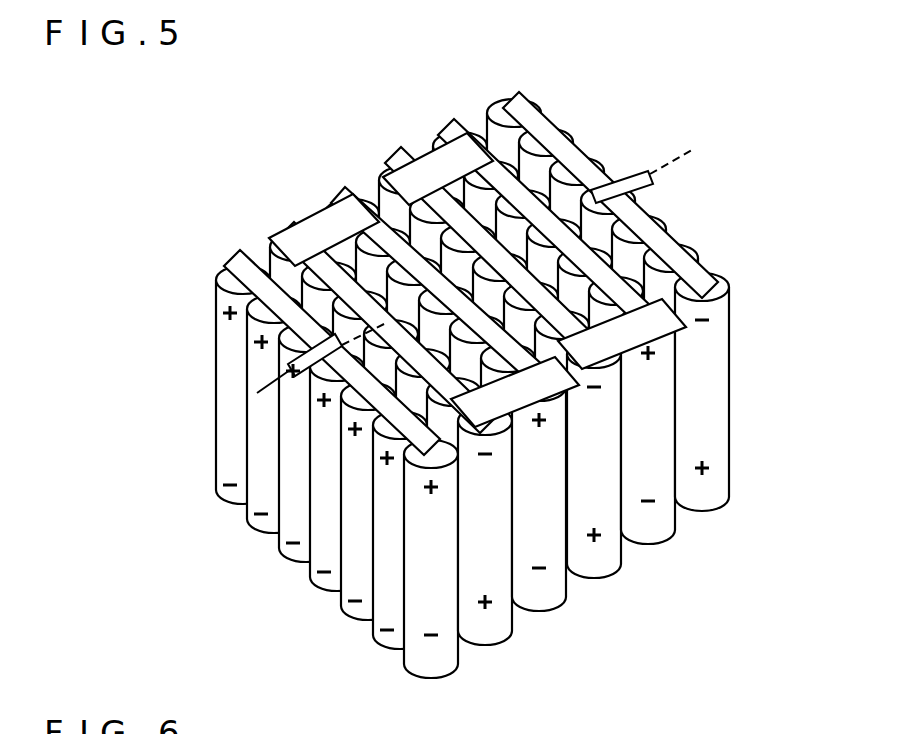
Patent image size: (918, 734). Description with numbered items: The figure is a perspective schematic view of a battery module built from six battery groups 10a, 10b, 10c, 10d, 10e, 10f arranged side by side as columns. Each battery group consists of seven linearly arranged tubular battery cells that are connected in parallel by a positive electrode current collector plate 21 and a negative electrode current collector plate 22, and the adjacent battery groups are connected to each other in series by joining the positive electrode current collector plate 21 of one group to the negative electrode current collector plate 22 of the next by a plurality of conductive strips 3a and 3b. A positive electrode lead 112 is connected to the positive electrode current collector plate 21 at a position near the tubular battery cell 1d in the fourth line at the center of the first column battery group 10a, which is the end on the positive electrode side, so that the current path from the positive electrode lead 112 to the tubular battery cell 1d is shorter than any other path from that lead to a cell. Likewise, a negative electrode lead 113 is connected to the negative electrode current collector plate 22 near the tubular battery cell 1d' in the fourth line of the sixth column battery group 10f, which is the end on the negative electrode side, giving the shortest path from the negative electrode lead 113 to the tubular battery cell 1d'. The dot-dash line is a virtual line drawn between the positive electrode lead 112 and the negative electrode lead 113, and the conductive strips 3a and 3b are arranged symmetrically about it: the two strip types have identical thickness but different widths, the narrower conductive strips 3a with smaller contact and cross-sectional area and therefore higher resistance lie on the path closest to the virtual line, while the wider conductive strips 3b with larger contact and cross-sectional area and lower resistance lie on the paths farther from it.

The battery group 10a is at (446, 587).
The battery group 10b is at (500, 560).
The battery group 10c is at (553, 524).
The battery group 10d is at (609, 492).
The battery group 10e is at (661, 457).
The battery group 10f is at (715, 423).
The tubular battery cell 1d is at (279, 474).
The tubular battery cell 1d' is at (645, 297).
The positive electrode current collector plate 21 is at (493, 173).
The negative electrode current collector plate 22 is at (377, 194).
The conductive strip 3a is at (537, 150).
The conductive strip 3b is at (318, 232).
The positive electrode lead 112 is at (260, 392).
The negative electrode lead 113 is at (622, 182).